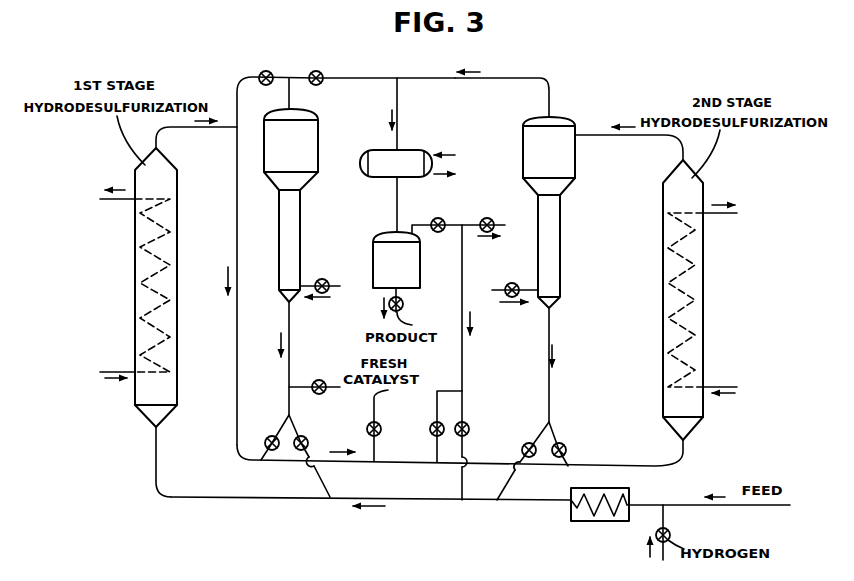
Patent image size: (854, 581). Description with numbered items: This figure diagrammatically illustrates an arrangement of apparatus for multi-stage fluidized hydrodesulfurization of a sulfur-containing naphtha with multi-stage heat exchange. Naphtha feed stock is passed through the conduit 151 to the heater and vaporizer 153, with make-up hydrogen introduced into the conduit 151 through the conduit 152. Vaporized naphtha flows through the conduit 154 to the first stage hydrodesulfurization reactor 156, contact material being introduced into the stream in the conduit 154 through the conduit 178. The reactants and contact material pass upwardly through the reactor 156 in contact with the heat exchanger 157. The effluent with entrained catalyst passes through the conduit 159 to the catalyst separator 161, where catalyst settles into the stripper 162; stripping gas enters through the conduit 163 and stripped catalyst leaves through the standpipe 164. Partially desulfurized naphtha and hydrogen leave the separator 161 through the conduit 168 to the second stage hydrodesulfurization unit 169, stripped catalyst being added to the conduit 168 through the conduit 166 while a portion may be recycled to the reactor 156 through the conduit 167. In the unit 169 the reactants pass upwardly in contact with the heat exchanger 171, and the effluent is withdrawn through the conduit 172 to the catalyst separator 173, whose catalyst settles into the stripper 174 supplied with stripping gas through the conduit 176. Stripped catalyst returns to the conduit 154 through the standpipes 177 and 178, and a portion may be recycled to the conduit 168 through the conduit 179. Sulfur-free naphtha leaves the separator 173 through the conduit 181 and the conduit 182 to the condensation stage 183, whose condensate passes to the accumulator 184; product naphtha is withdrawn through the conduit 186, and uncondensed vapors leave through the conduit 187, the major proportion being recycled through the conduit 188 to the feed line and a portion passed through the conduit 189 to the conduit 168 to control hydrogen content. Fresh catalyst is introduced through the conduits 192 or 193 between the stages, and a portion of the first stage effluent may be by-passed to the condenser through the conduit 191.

The conduit 151 is at (670, 503).
The conduit 152 is at (670, 532).
The heater and vaporizer 153 is at (572, 510).
The conduit 154 is at (283, 499).
The first stage hydrodesulfurization reactor 156 is at (166, 392).
The heat exchanger 157 is at (136, 240).
The conduit 159 is at (222, 128).
The catalyst separator 161 is at (308, 148).
The stripper 162 is at (293, 216).
The conduit 163 is at (320, 280).
The conduit or standpipe 164 is at (291, 340).
The conduit 166 is at (280, 428).
The conduit 167 is at (296, 436).
The conduit 168 is at (243, 80).
The second stage hydrodesulfurization unit 169 is at (668, 402).
The heat exchanger 171 is at (703, 244).
The conduit 172 is at (660, 138).
The catalyst separator 173 is at (528, 150).
The stripper 174 is at (560, 224).
The conduit 176 is at (515, 284).
The conduit or standpipe 177 is at (550, 342).
The conduit or standpipe 178 is at (538, 434).
The conduit 179 is at (554, 436).
The conduit 181 is at (496, 78).
The conduit 182 is at (398, 116).
The condensation stage 183 is at (406, 152).
The accumulator 184 is at (377, 252).
The conduit 186 is at (404, 304).
The conduit 187 is at (450, 225).
The conduit 188 is at (466, 368).
The conduit 189 is at (436, 397).
The conduit 191 is at (370, 78).
The conduit 192 is at (300, 386).
The conduit 193 is at (380, 430).